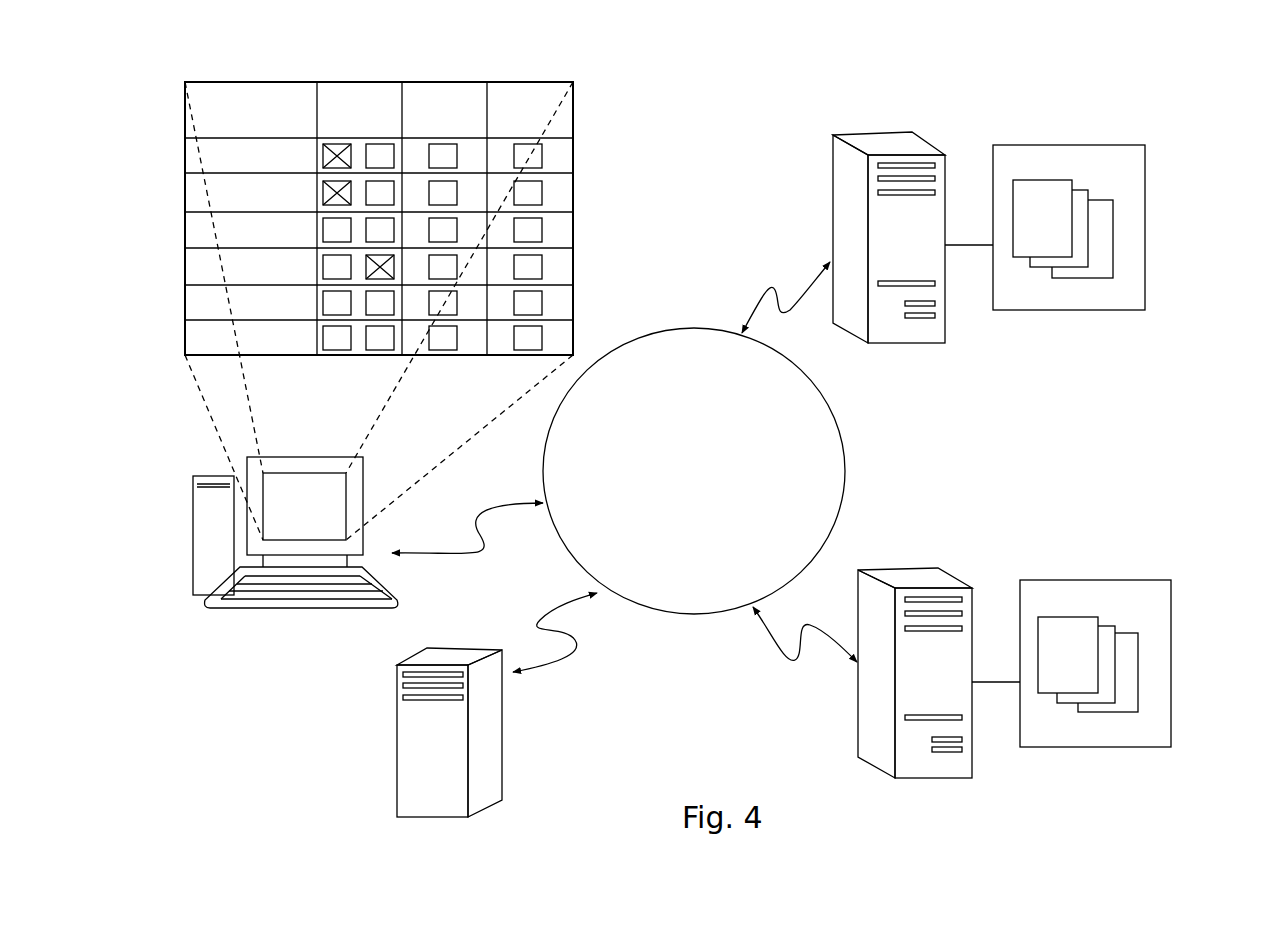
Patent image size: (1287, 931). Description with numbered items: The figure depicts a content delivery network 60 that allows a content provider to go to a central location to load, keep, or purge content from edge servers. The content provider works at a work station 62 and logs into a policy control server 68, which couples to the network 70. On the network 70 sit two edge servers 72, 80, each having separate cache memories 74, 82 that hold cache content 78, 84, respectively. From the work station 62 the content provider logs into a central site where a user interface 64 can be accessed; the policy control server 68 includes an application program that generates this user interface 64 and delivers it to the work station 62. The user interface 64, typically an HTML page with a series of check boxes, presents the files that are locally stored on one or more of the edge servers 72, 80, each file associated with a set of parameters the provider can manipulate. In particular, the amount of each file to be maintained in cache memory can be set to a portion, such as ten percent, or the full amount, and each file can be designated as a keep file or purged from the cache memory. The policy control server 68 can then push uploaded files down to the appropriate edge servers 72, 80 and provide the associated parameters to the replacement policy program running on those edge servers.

The content delivery network 60 is at (1175, 81).
The work station 62 is at (233, 608).
The user interface 64 is at (600, 119).
The policy control server 68 is at (468, 775).
The network 70 is at (845, 450).
The edge server 72 is at (972, 765).
The cache memory 74 is at (1171, 620).
The cache content 78 is at (1140, 674).
The edge server 80 is at (945, 325).
The cache memory 82 is at (1147, 178).
The cache content 84 is at (1115, 231).